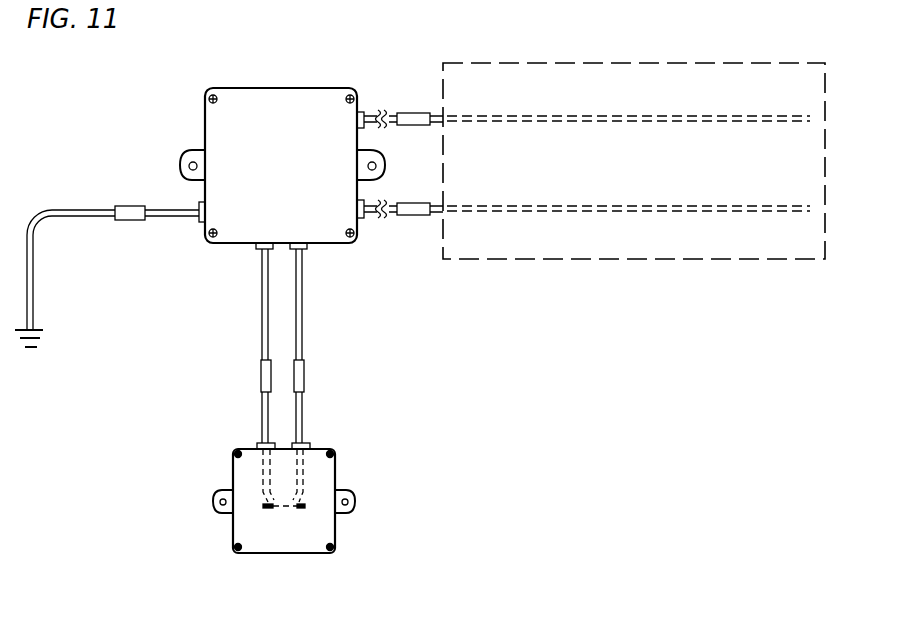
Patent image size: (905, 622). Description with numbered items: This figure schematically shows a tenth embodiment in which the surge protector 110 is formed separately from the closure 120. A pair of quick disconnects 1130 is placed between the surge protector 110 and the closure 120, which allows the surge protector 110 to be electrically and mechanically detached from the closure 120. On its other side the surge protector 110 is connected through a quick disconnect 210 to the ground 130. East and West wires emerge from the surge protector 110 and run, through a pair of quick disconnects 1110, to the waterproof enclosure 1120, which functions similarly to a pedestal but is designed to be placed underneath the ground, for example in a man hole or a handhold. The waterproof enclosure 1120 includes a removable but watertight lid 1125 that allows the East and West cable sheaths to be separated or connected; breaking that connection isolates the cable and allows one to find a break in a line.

The surge protector 110 is at (252, 84).
The closure 120 is at (613, 63).
The ground 130 is at (40, 328).
The quick disconnect 210 is at (130, 207).
The quick disconnects 1110 is at (260, 372).
The waterproof enclosure 1120 is at (335, 470).
The lid 1125 is at (270, 510).
The quick disconnects 1130 is at (410, 113).